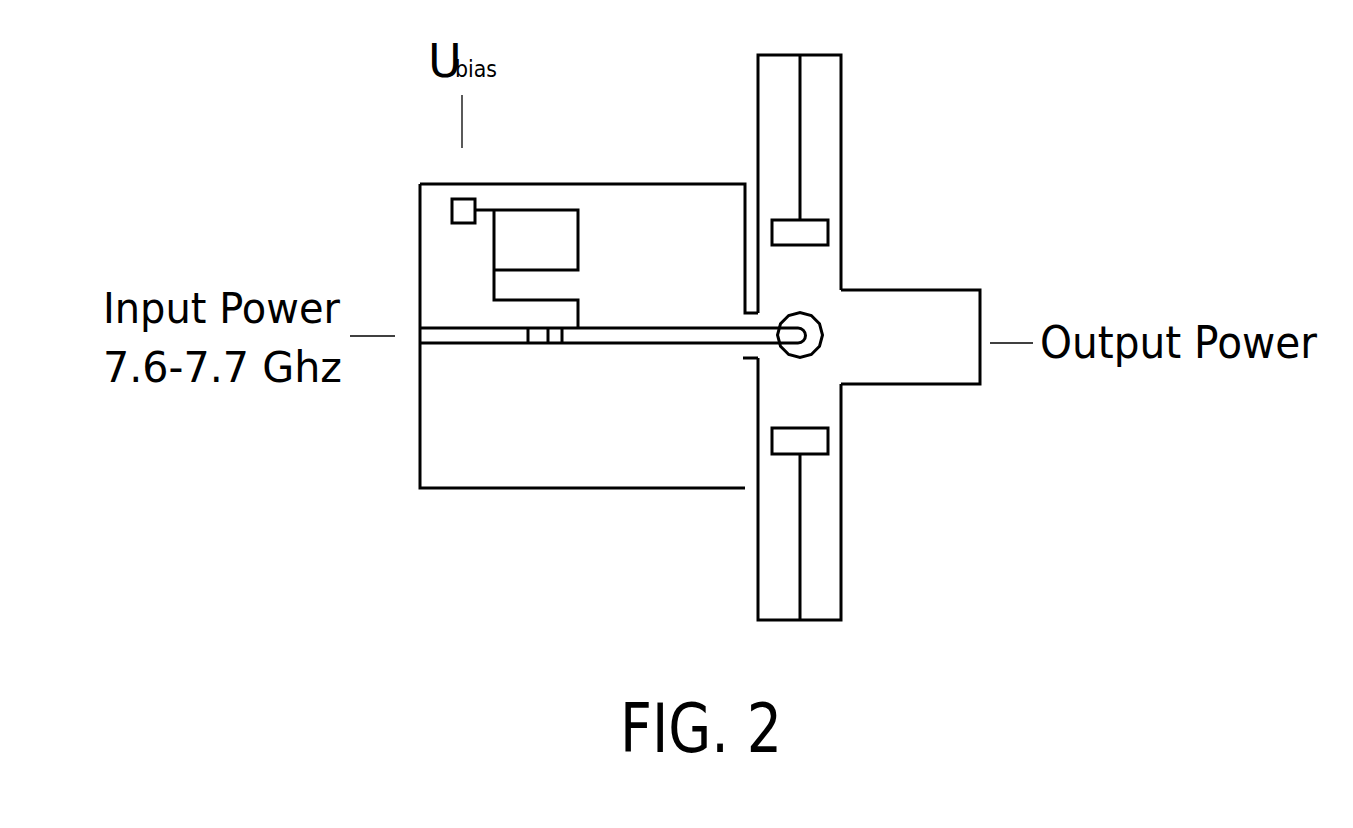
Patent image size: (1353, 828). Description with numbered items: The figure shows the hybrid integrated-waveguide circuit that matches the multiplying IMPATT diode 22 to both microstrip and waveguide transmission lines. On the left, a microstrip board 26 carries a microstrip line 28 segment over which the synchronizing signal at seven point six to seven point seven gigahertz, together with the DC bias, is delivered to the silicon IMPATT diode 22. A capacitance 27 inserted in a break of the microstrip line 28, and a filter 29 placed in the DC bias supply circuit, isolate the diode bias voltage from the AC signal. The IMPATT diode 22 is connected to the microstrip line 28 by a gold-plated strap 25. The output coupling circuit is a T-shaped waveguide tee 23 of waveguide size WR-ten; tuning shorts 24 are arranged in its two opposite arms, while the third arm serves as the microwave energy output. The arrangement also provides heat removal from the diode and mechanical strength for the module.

The multiplying IMPATT diode 22 is at (805, 333).
The waveguide tee 23 is at (878, 342).
The tuning shorts 24 is at (800, 157).
The gold-plated strap 25 is at (768, 337).
The microstrip board 26 is at (450, 438).
The capacitance 27 is at (538, 337).
The microstrip line 28 is at (670, 343).
The filter 29 is at (522, 240).